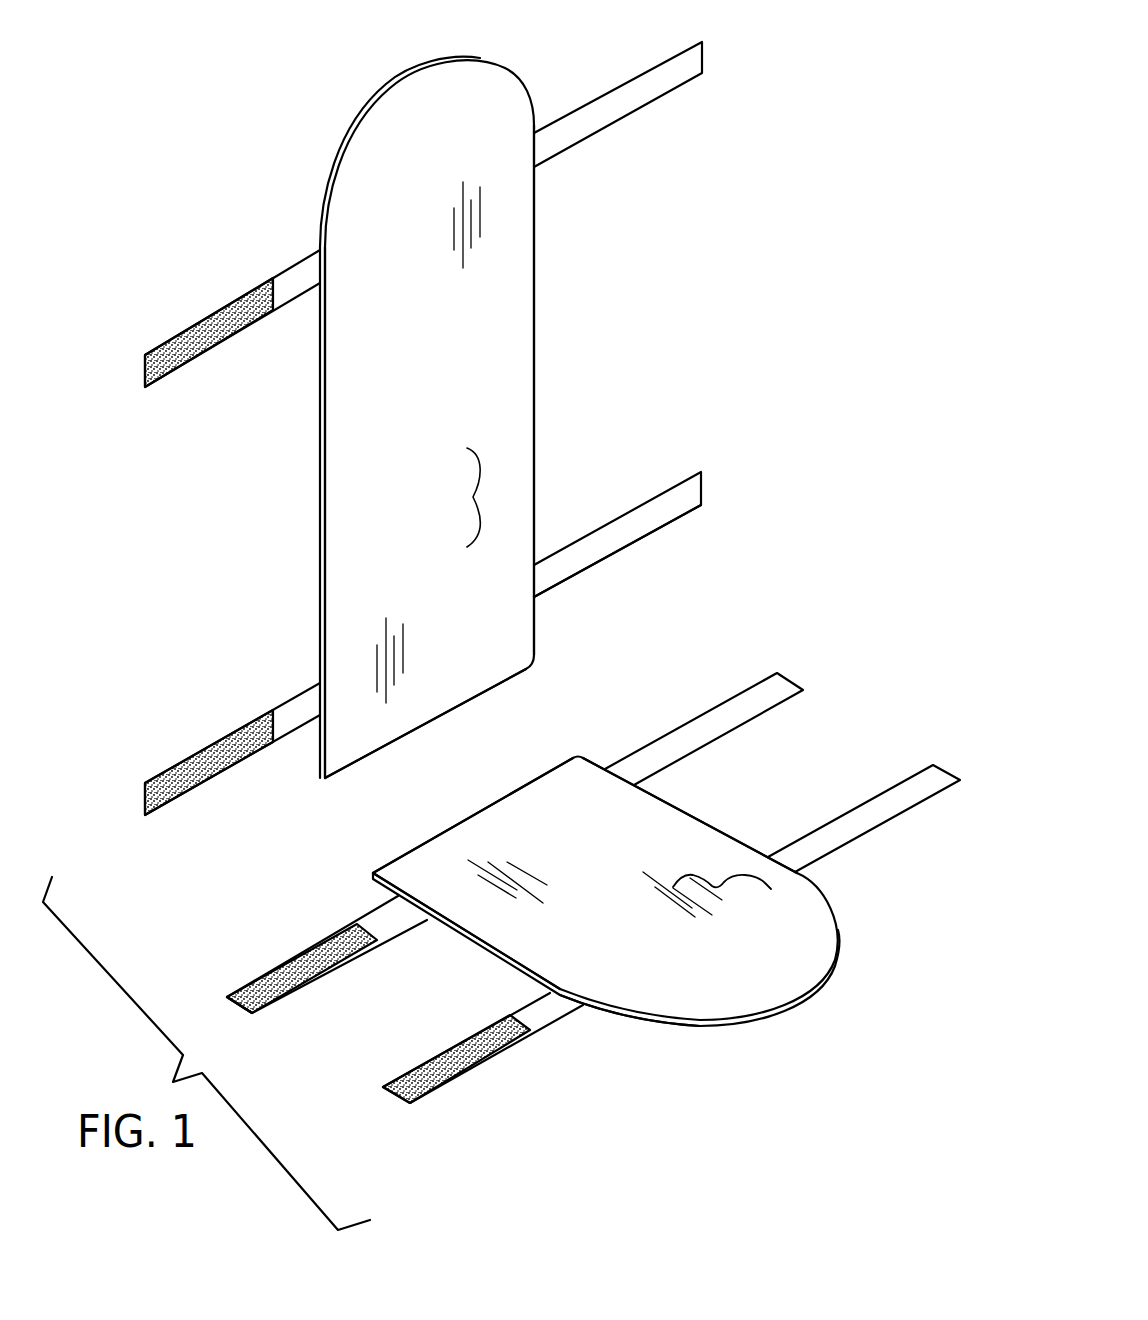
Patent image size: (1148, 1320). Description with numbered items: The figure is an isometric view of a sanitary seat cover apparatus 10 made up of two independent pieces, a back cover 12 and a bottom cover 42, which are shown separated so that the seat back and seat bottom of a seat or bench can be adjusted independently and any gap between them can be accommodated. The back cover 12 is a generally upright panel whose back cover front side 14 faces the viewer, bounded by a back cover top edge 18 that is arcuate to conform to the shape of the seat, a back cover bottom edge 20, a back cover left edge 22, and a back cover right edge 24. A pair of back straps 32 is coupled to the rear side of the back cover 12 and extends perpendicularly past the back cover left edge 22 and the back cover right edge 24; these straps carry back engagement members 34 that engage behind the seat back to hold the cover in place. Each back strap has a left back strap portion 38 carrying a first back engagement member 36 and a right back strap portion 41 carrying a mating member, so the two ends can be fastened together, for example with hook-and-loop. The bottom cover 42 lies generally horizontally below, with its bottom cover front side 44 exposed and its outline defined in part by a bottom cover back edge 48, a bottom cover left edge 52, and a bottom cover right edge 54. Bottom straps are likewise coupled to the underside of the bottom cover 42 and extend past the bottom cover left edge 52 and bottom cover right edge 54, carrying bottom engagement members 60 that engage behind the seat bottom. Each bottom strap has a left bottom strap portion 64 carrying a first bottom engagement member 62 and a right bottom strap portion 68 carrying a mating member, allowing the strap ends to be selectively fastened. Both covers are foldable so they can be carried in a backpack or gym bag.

The sanitary seat cover apparatus 10 is at (868, 167).
The back cover 12 is at (498, 360).
The back cover front side 14 is at (473, 497).
The back cover top edge 18 is at (430, 68).
The back cover bottom edge 20 is at (368, 758).
The back cover left edge 22 is at (320, 490).
The back cover right edge 24 is at (533, 217).
The back straps 32 is at (662, 97).
The back engagement members 34 is at (207, 352).
The first back engagement member 36 is at (180, 335).
The left back strap portion 38 is at (320, 727).
The right back strap portion 41 is at (710, 507).
The bottom cover 42 is at (620, 1022).
The bottom cover front side 44 is at (723, 884).
The bottom cover back edge 48 is at (530, 783).
The bottom cover left edge 52 is at (485, 943).
The bottom cover right edge 54 is at (683, 811).
The bottom engagement members 60 is at (313, 978).
The first bottom engagement member 62 is at (260, 1008).
The left bottom strap portion 64 is at (367, 885).
The right bottom strap portion 68 is at (763, 655).